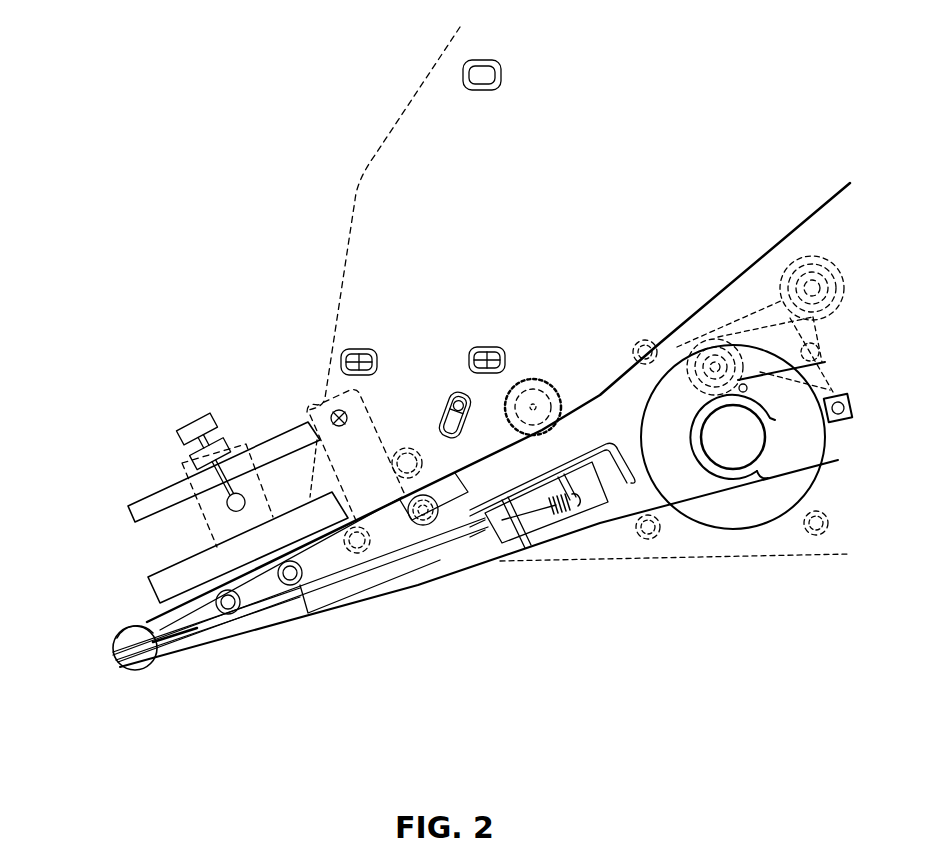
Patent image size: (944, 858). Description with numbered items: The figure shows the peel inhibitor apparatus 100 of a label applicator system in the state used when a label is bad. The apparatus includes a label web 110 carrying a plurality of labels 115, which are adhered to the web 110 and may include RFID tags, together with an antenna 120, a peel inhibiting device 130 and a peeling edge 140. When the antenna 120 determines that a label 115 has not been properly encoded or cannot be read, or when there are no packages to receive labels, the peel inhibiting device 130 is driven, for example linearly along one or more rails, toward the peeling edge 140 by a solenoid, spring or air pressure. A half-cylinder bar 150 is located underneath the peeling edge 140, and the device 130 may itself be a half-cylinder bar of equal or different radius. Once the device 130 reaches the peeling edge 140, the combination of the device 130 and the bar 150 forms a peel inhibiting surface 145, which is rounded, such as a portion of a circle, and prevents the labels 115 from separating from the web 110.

The peel inhibitor apparatus 100 is at (160, 78).
The label web 110 is at (615, 375).
The label 115 is at (332, 543).
The antenna 120 is at (158, 576).
The peel inhibiting device 130 is at (135, 630).
The peeling edge 140 is at (116, 659).
The peel inhibiting surface 145 is at (113, 650).
The half-cylinder bar 150 is at (148, 671).